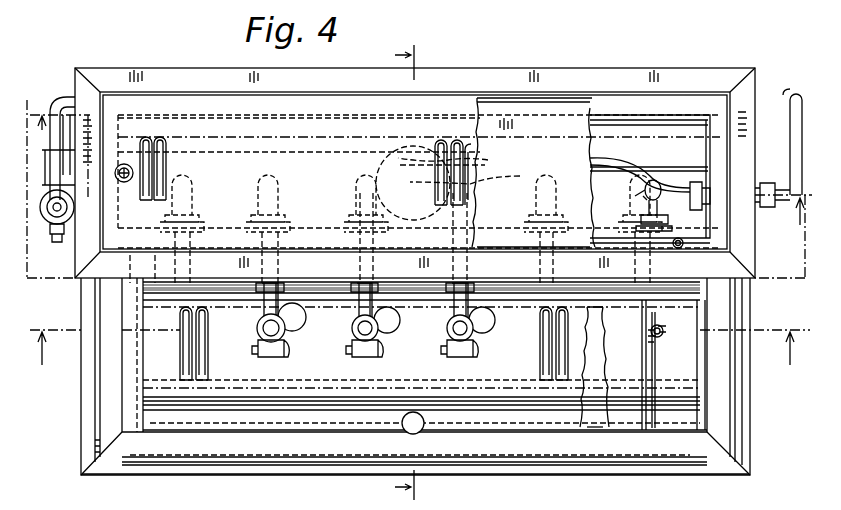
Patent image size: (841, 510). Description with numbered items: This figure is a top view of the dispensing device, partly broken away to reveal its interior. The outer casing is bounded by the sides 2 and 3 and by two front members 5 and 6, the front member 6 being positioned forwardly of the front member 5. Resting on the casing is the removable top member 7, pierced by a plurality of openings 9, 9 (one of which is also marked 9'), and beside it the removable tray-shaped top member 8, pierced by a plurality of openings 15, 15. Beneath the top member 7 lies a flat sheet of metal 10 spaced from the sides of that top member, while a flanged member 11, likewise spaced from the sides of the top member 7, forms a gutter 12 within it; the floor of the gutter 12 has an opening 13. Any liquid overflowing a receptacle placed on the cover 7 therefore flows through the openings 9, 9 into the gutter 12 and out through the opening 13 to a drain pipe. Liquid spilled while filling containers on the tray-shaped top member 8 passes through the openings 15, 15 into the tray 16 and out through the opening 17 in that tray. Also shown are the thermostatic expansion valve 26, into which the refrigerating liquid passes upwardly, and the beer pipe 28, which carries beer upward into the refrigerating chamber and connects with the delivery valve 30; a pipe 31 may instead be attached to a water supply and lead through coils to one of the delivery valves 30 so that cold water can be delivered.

The side 2 is at (752, 445).
The side 3 is at (82, 412).
The front member 5 is at (330, 302).
The front member 6 is at (263, 477).
The removable top member 7 is at (457, 108).
The removable tray-shaped top member 8 is at (555, 408).
The opening 9 is at (424, 272).
The heating coil 9' is at (169, 168).
The flat sheet of metal 10 is at (568, 125).
The flanged member 11 is at (419, 187).
The gutter 12 is at (663, 105).
The opening 13 is at (683, 239).
The opening 15 is at (205, 318).
The tray 16 is at (683, 410).
The opening 17 is at (663, 327).
The thermostatic expansion valve 26 is at (60, 234).
The beer pipe 28 is at (641, 196).
The delivery valve 30 is at (300, 345).
The pipe 31 is at (617, 163).